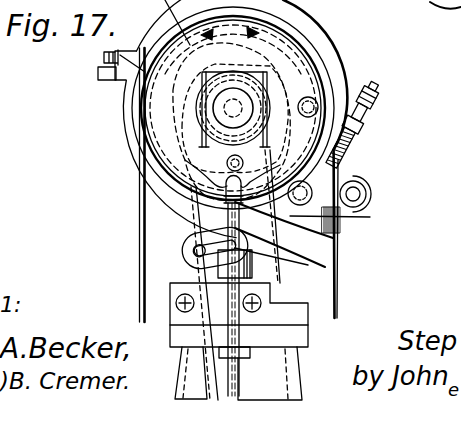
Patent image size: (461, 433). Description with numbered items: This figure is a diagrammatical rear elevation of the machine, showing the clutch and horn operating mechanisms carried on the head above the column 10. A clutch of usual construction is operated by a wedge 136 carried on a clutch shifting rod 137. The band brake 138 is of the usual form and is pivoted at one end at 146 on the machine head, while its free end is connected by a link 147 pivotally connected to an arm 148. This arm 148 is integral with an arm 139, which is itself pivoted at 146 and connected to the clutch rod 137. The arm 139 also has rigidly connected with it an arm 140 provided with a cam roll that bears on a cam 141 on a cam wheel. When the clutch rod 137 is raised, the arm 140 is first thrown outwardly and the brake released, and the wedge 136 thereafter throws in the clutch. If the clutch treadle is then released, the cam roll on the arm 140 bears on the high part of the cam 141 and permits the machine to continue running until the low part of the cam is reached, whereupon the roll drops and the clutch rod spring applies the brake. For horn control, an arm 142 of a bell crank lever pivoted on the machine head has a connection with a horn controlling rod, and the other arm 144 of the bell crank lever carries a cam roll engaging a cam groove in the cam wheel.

The column 10 is at (238, 373).
The wedge 136 is at (188, 132).
The clutch shifting rod 137 is at (308, 333).
The band brake 138 is at (325, 44).
The arm 139 is at (300, 242).
The arm 140 is at (330, 168).
The cam 141 is at (302, 73).
The arm of bell crank lever 142 is at (190, 250).
The arm of bell crank lever 144 is at (143, 210).
The pivot 146 is at (353, 194).
The link 147 is at (377, 88).
The arm 148 is at (323, 183).